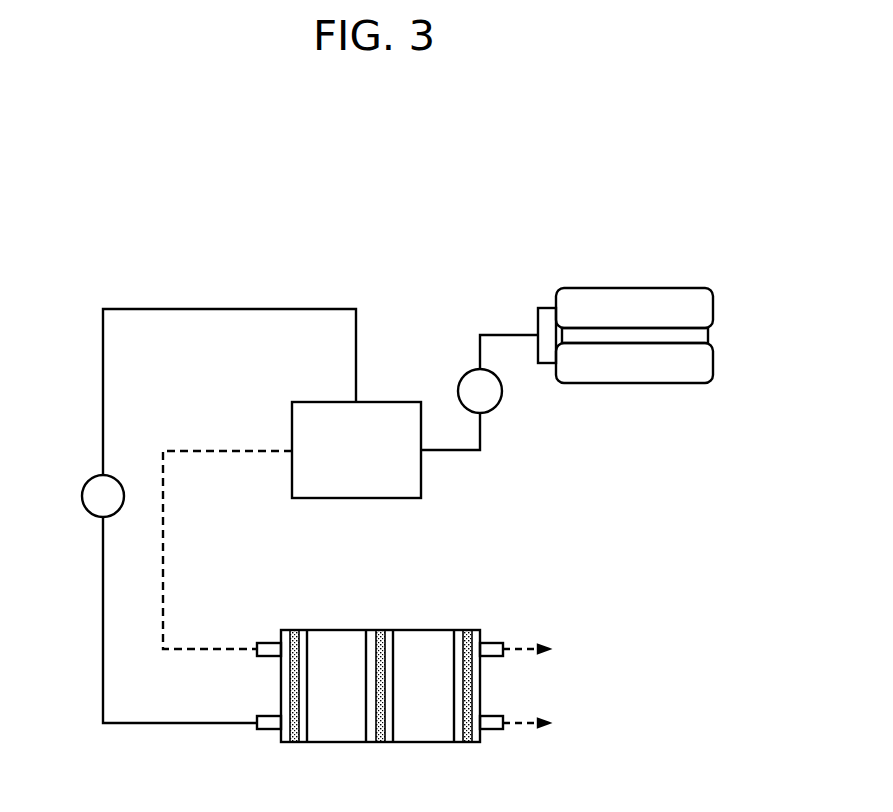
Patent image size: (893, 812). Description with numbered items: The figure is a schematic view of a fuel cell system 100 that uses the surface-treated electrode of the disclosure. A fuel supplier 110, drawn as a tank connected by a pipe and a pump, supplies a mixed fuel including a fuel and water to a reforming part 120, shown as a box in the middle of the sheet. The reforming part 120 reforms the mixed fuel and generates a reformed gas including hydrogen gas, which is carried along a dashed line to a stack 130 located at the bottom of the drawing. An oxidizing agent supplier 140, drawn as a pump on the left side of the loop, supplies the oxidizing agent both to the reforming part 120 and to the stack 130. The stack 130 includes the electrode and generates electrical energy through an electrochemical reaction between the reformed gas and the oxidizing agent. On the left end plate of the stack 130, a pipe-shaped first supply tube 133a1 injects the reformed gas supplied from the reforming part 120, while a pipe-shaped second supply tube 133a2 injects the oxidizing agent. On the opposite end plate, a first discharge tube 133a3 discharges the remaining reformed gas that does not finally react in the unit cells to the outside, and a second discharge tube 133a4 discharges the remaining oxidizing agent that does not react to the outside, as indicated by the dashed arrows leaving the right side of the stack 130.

The fuel cell system 100 is at (345, 196).
The fuel supplier 110 is at (510, 298).
The reforming part 120 is at (317, 386).
The stack 130 is at (361, 612).
The oxidizing agent supplier 140 is at (74, 464).
The first supply tube 133a1 is at (256, 654).
The second supply tube 133a2 is at (256, 727).
The first discharge tube 133a3 is at (505, 733).
The second discharge tube 133a4 is at (505, 659).